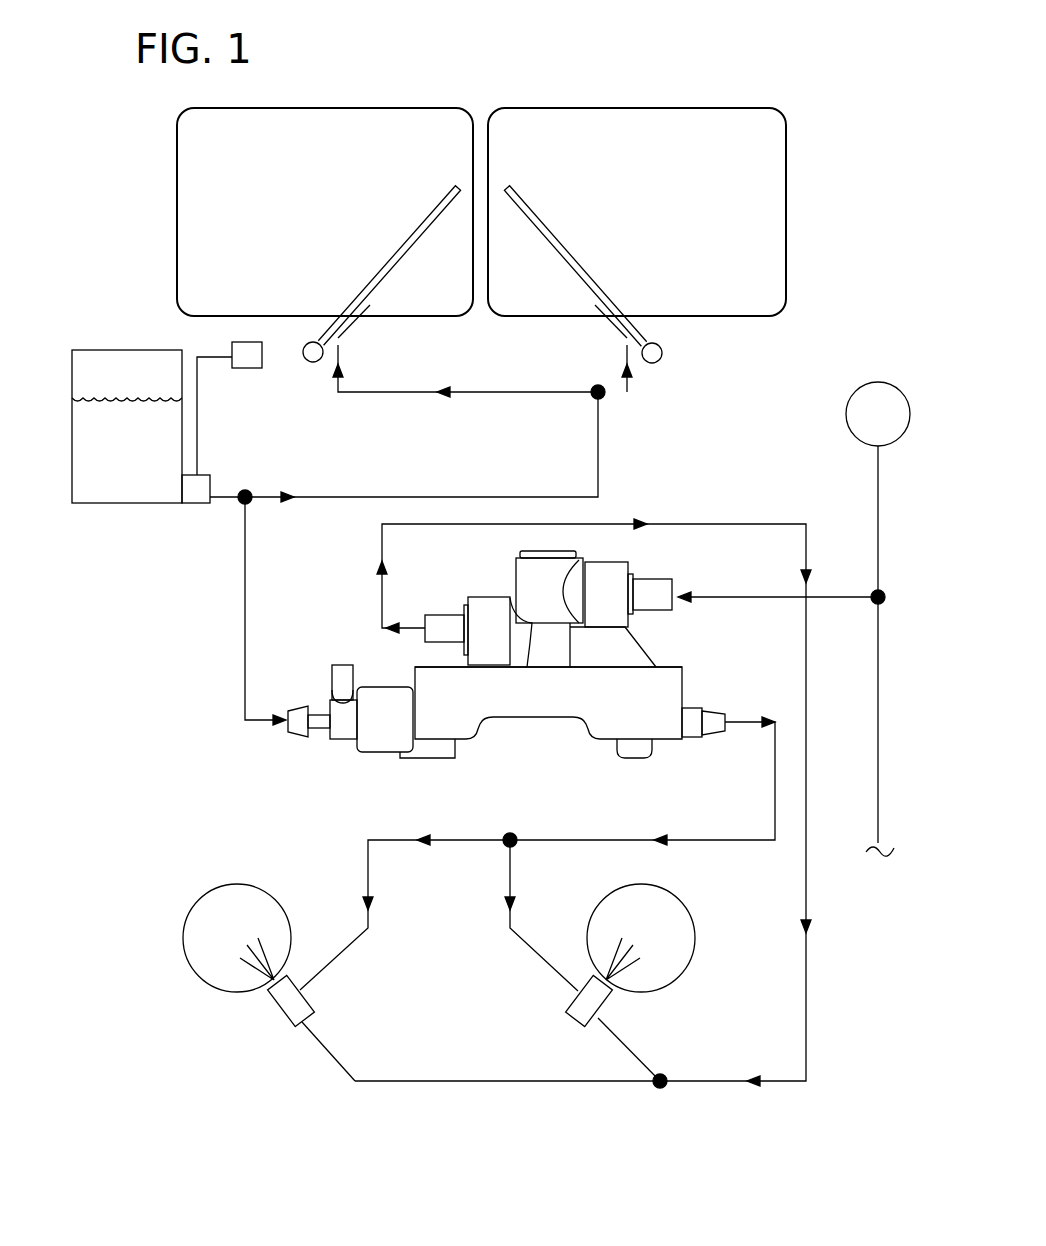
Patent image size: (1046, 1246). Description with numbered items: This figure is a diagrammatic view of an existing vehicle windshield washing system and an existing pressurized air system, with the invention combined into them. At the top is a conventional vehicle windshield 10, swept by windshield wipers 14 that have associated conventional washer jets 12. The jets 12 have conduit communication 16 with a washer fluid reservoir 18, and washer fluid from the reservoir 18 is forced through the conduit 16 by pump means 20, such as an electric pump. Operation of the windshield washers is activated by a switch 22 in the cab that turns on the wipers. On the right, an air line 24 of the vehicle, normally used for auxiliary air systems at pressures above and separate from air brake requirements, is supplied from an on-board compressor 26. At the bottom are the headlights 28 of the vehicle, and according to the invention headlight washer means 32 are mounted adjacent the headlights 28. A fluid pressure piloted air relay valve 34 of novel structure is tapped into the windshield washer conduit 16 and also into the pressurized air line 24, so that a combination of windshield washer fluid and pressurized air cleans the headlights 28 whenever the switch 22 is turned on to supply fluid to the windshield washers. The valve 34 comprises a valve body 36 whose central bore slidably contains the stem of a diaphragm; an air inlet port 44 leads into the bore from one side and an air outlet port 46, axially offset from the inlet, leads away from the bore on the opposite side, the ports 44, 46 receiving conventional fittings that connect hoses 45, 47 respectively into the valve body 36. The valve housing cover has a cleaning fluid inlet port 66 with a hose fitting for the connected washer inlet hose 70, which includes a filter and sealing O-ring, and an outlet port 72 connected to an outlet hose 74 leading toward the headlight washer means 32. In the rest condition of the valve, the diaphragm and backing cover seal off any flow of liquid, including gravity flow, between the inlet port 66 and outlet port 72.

The vehicle windshield 10 is at (197, 187).
The washer jets 12 is at (350, 332).
The windshield wipers 14 is at (393, 252).
The conduit 16 is at (346, 497).
The washer fluid reservoir 18 is at (80, 470).
The pump means 20 is at (195, 495).
The switch 22 is at (248, 368).
The air line 24 is at (875, 508).
The on-board compressor 26 is at (880, 382).
The headlights 28 is at (237, 885).
The headlight washer means 32 is at (287, 1006).
The fluid pressure piloted air relay valve 34 is at (374, 768).
The valve body 36 is at (642, 657).
The air inlet port 44 is at (660, 578).
The hose 45 is at (740, 597).
The air outlet port 46 is at (437, 622).
The hose 47 is at (382, 600).
The cleaning fluid inlet port 66 is at (380, 707).
The washer inlet hose 70 is at (243, 652).
The outlet port 72 is at (669, 735).
The outlet hose 74 is at (775, 795).